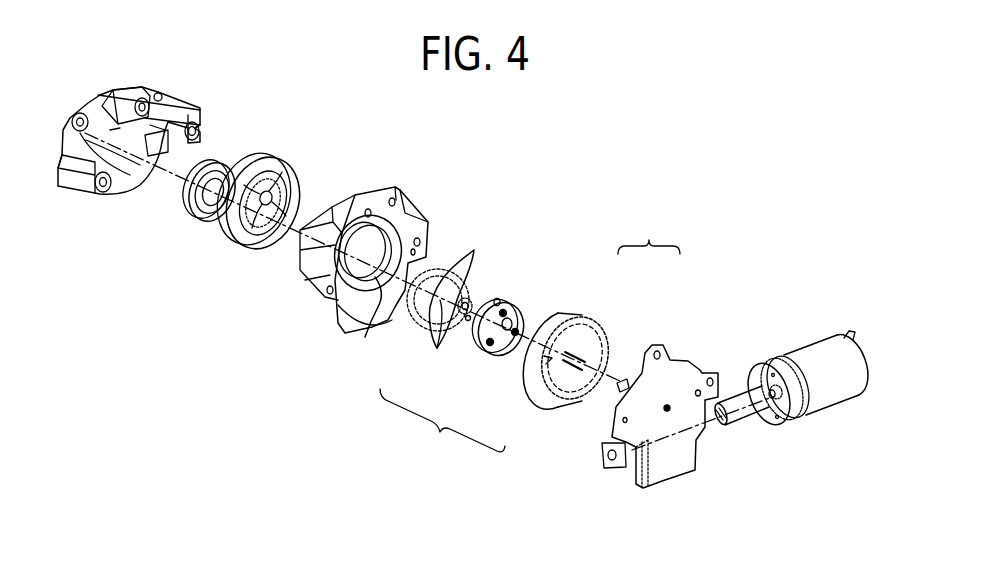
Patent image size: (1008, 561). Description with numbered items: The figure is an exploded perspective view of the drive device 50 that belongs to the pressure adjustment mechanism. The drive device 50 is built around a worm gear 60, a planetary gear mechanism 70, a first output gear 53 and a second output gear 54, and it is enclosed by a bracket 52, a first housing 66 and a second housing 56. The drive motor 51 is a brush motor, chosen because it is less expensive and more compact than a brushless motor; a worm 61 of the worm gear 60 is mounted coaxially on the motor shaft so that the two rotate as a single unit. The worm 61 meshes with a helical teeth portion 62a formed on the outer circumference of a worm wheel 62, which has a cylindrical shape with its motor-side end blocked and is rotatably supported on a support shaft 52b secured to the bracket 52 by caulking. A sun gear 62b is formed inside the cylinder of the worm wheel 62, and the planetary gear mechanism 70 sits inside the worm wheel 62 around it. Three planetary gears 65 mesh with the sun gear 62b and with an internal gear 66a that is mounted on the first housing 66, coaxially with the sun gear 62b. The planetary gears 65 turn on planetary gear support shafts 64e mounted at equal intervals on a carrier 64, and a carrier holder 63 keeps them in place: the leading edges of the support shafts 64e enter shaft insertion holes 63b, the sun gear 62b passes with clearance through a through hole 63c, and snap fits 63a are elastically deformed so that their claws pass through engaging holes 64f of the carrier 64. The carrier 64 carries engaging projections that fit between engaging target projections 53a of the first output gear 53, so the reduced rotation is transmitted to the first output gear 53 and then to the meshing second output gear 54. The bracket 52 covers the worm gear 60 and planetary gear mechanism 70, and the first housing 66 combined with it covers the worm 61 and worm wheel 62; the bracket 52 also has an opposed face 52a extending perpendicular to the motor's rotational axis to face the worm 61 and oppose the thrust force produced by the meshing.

The drive device 50 is at (562, 203).
The drive motor 51 is at (815, 340).
The bracket 52 is at (640, 412).
The opposed face 52a is at (613, 468).
The support shaft 52b is at (624, 382).
The first output gear 53 is at (257, 216).
The engaging target projections 53a is at (274, 178).
The second output gear 54 is at (203, 221).
The second housing 56 is at (183, 108).
The worm gear 60 is at (649, 234).
The worm 61 is at (739, 391).
The worm wheel 62 is at (561, 353).
The helical teeth portion 62a is at (576, 312).
The sun gear 62b is at (538, 397).
The carrier holder 63 is at (501, 327).
The snap fits 63a is at (499, 293).
The shaft insertion holes 63b is at (518, 328).
The through hole 63c is at (511, 348).
The carrier 64 is at (439, 289).
The planetary gear support shafts 64e is at (470, 266).
The engaging holes 64f is at (434, 262).
The planetary gears 65 is at (470, 336).
The first housing 66 is at (368, 272).
The internal gear 66a is at (365, 337).
The planetary gear mechanism 70 is at (442, 422).